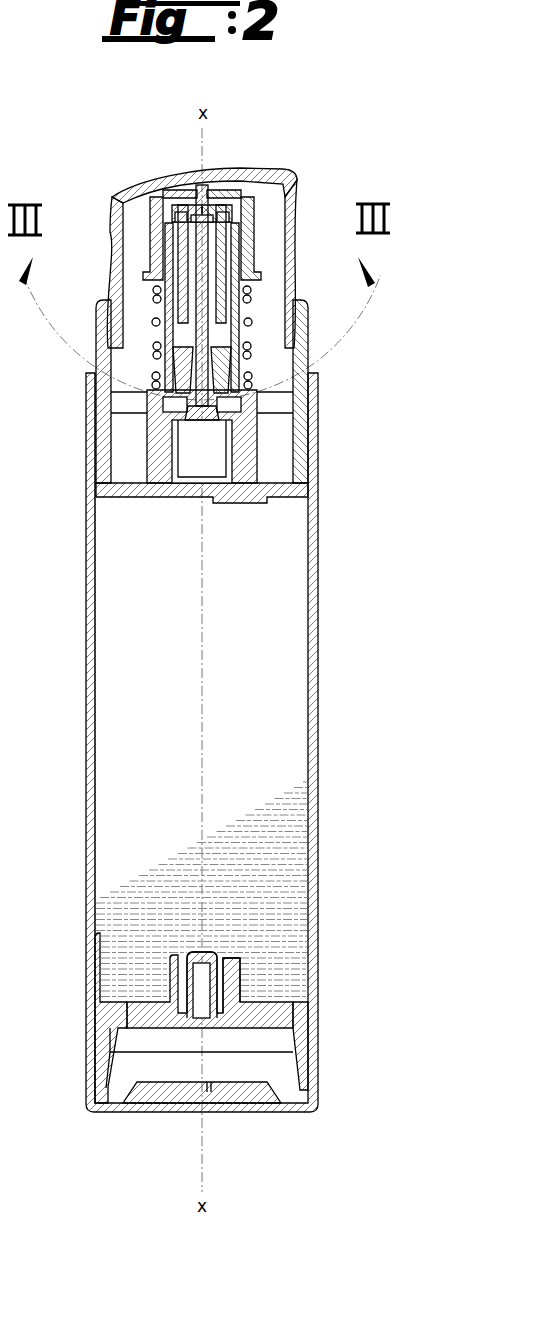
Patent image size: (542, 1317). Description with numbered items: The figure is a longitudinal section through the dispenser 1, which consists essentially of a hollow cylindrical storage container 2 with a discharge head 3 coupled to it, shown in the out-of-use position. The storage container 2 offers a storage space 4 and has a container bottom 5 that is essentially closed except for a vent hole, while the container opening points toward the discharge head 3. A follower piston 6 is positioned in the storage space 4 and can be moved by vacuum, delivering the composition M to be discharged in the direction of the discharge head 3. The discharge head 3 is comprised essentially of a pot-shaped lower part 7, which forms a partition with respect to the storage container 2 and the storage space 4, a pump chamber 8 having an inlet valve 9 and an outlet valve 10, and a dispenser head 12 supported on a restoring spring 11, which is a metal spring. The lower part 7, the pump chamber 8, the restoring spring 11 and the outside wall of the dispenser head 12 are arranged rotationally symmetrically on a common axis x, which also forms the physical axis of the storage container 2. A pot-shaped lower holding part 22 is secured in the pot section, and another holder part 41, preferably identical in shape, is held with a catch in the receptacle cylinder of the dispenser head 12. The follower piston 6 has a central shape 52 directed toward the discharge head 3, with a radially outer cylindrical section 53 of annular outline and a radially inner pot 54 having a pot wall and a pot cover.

The dispenser 1 is at (112, 184).
The storage container 2 is at (94, 768).
The discharge head 3 is at (92, 325).
The storage space 4 is at (247, 712).
The container bottom 5 is at (160, 1085).
The follower piston 6 is at (137, 1020).
The lower part 7 is at (283, 486).
The pump chamber 8 is at (222, 353).
The inlet valve 9 is at (230, 423).
The outlet valve 10 is at (226, 195).
The restoring spring 11 is at (252, 321).
The dispenser head 12 is at (162, 184).
The lower holding part 22 is at (158, 474).
The holder part 41 is at (250, 236).
The shape 52 is at (244, 982).
The cylindrical section 53 is at (232, 988).
The pot 54 is at (190, 967).
The composition M is at (242, 884).